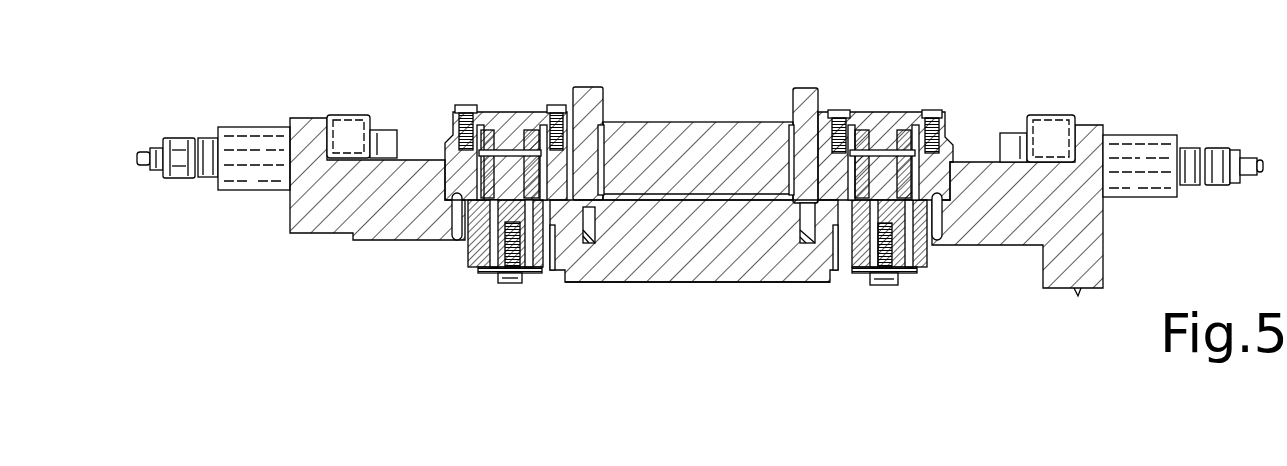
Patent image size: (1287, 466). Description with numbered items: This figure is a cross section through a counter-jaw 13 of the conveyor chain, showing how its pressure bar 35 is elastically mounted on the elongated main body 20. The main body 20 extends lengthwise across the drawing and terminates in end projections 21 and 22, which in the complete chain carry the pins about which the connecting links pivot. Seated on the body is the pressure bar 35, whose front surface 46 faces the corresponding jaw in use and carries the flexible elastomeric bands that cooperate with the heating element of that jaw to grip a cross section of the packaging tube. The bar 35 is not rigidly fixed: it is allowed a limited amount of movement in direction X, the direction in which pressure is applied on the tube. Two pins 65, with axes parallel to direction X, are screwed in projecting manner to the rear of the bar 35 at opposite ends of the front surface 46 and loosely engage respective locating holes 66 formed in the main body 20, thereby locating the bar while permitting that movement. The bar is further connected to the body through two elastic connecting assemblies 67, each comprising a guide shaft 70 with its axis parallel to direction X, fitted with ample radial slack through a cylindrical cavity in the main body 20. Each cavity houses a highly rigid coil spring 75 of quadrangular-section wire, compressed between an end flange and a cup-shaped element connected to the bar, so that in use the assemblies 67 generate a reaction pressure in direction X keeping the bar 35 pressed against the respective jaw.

The counter-jaw 13 is at (537, 103).
The main body 20 is at (697, 132).
The end projection 21 is at (383, 207).
The end projection 22 is at (978, 217).
The pressure bar 35 is at (627, 248).
The front surface 46 is at (693, 283).
The pin 65 is at (590, 100).
The locating hole 66 is at (600, 125).
The elastic connecting assembly 67 is at (488, 278).
The guide shaft 70 is at (545, 250).
The coil spring 75 is at (446, 145).